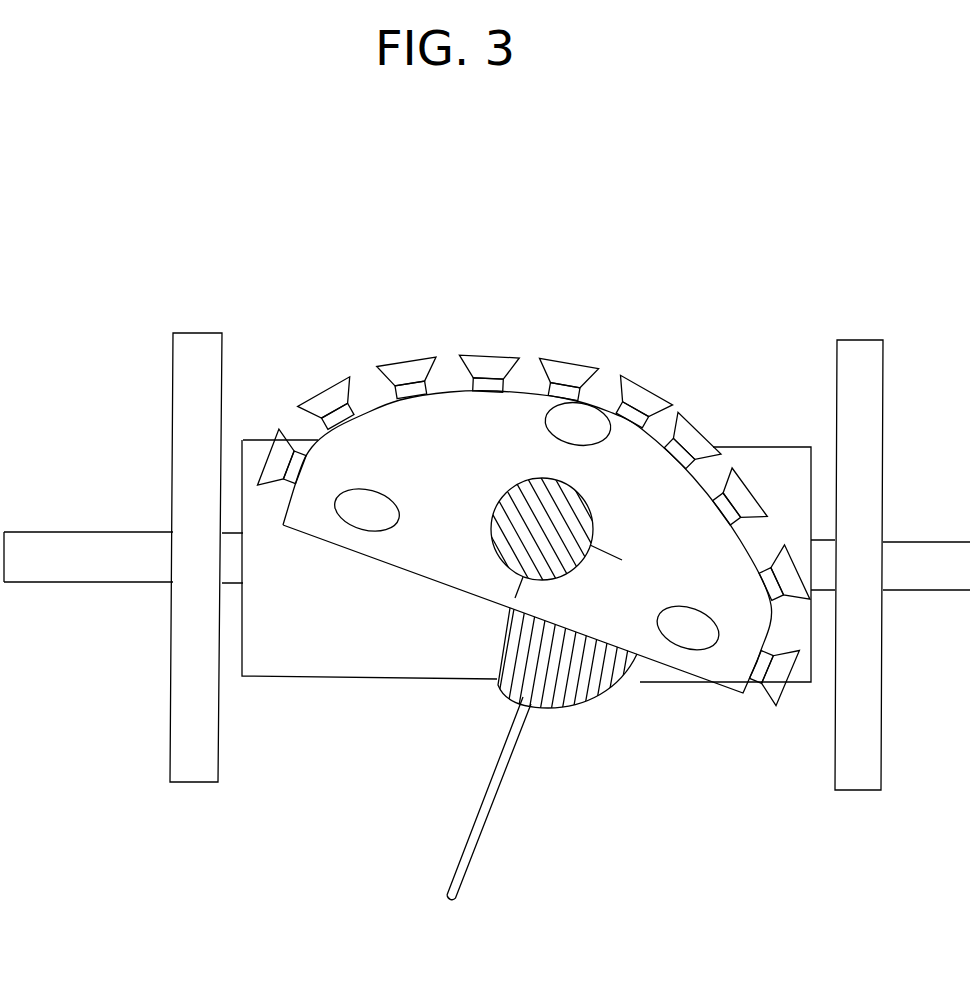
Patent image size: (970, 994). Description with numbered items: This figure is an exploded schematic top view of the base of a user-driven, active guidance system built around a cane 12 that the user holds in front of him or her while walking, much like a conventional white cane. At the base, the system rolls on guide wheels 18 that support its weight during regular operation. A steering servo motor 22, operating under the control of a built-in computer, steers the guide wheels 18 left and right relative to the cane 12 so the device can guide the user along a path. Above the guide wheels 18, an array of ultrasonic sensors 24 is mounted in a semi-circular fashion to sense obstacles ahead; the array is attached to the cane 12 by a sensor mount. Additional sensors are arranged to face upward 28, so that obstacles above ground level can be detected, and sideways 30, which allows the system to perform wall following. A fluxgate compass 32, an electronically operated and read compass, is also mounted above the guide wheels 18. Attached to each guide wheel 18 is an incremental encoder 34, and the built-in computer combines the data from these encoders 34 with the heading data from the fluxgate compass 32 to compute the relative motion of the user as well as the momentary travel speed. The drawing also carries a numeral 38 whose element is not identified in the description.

The cane 12 is at (483, 822).
The wheels 18 is at (173, 418).
The steering servo motor 22 is at (603, 690).
The ultrasonic sensors 24 is at (632, 393).
The upward facing sensors 28 is at (377, 503).
The sideways facing sensors 30 is at (753, 670).
The fluxgate compass 32 is at (558, 505).
The incremental encoder 34 is at (803, 682).
The hole 38 is at (572, 419).